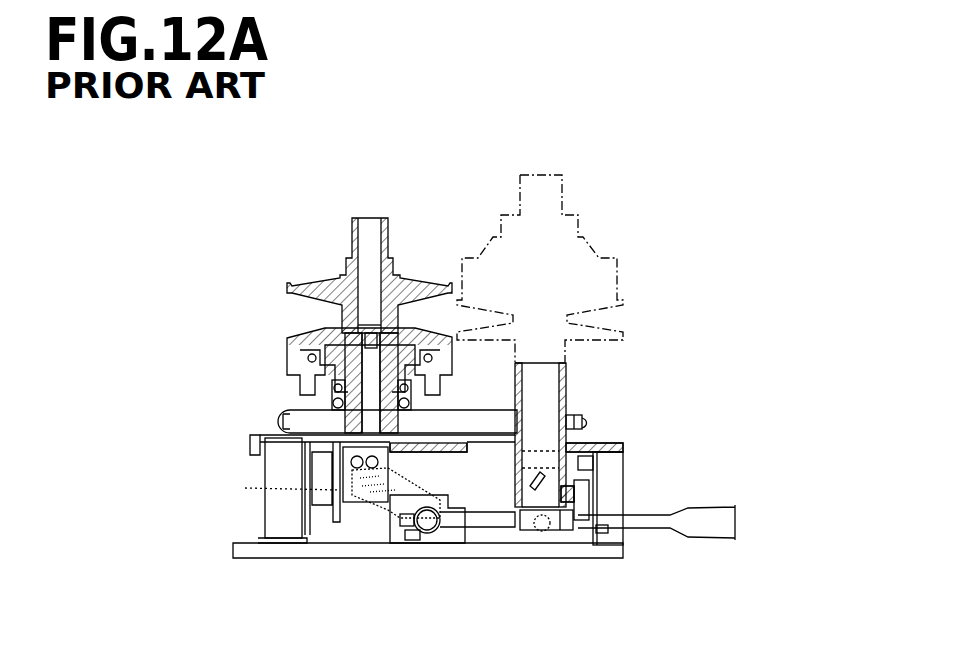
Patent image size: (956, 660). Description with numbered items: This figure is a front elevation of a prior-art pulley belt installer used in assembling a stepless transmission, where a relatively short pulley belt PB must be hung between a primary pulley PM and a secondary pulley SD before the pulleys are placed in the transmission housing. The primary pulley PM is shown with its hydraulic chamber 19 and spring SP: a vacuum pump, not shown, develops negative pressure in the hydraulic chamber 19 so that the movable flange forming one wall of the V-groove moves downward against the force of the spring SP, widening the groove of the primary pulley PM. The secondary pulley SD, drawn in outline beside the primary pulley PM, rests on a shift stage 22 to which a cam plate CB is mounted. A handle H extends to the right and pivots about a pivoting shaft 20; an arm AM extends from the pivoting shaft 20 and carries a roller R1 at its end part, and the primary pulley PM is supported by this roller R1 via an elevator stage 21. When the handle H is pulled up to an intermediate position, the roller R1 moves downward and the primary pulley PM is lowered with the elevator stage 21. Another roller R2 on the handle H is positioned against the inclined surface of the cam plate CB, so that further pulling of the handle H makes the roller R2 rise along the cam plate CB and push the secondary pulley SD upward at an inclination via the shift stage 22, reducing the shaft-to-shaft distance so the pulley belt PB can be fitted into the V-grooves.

The primary pulley PM is at (407, 256).
The secondary pulley SD is at (593, 222).
The hydraulic chamber 19 is at (442, 356).
The spring SP is at (432, 388).
The pulley belt PB is at (582, 417).
The shift stage 22 is at (600, 466).
The handle H is at (640, 518).
The roller R1 is at (340, 490).
The elevator stage 21 is at (358, 498).
The arm AM is at (385, 507).
The pivoting shaft 20 is at (428, 522).
The roller R2 is at (542, 525).
The cam plate CB is at (563, 523).